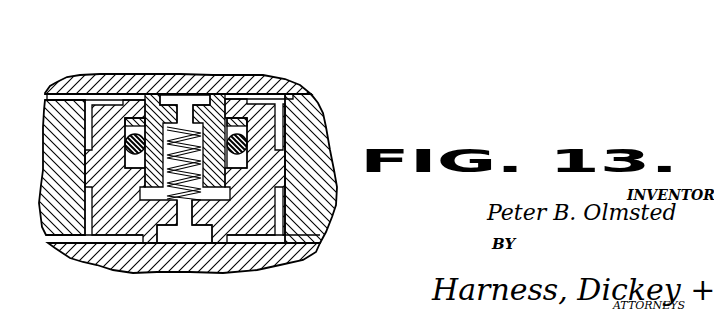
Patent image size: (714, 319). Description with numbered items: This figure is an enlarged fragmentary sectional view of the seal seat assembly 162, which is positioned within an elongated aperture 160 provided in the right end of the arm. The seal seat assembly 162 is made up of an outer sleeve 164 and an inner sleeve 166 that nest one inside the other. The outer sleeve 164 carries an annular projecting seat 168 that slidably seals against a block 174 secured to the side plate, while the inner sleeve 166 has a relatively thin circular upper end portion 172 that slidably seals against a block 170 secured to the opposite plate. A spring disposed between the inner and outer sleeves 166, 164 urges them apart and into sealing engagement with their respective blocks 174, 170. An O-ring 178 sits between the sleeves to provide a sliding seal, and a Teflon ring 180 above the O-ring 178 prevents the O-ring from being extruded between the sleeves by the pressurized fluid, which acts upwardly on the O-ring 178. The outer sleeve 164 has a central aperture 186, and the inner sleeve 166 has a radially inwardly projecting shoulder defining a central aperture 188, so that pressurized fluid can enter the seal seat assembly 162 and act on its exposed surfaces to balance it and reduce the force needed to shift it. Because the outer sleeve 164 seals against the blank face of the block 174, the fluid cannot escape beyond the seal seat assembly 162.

The elongated aperture 160 is at (280, 114).
The seal seat assembly 162 is at (270, 102).
The outer sleeve 164 is at (262, 213).
The inner sleeve 166 is at (232, 118).
The annular projecting seat 168 is at (118, 265).
The block 170 is at (91, 72).
The circular upper end portion 172 is at (147, 93).
The block 174 is at (268, 259).
The O-ring 178 is at (92, 152).
The Teflon ring 180 is at (128, 118).
The central aperture 186 is at (183, 212).
The central aperture 188 is at (186, 97).